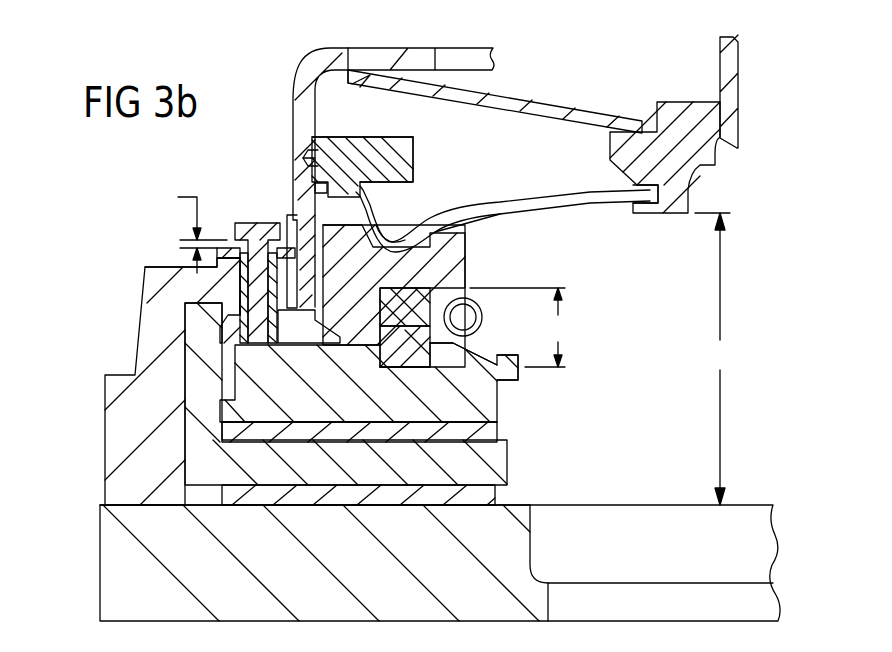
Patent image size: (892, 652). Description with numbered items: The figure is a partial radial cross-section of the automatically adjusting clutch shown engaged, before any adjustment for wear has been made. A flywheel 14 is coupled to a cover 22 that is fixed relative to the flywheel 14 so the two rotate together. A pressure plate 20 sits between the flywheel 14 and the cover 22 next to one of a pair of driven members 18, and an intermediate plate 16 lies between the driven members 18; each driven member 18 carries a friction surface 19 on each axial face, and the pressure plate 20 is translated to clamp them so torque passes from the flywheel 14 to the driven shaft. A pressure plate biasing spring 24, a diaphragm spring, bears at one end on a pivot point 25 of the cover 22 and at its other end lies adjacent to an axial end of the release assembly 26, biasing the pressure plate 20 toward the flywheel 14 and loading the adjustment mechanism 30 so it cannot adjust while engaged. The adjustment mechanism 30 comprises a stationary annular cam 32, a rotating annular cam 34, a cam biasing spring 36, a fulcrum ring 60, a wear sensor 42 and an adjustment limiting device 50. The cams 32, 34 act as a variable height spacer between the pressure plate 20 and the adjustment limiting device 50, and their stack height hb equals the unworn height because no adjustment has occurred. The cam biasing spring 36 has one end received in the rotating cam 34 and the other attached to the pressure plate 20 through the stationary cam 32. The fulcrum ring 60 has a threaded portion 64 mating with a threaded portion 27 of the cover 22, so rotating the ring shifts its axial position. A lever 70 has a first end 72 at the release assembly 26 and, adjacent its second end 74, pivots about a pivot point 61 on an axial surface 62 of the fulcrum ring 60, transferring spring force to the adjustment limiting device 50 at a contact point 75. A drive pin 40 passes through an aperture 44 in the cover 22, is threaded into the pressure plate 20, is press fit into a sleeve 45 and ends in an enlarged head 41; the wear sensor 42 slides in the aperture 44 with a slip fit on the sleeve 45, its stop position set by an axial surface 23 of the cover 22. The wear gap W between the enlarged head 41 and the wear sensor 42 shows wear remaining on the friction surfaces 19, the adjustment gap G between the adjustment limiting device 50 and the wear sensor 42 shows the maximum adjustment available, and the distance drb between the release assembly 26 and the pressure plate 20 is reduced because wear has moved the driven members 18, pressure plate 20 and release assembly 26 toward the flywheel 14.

The flywheel 14 is at (118, 563).
The intermediate plate 16 is at (195, 463).
The driven members 18 is at (487, 492).
The friction surface 19 is at (267, 418).
The pressure plate 20 is at (483, 407).
The cover 22 is at (307, 72).
The axial surface 23 is at (162, 265).
The pressure plate biasing spring 24 is at (523, 103).
The pivot point 25 is at (350, 75).
The release assembly 26 is at (725, 157).
The threaded portion 27 is at (310, 157).
The adjustment mechanism 30 is at (519, 273).
The stationary annular cam 32 is at (521, 379).
The rotating annular cam 34 is at (430, 292).
The cam biasing spring 36 is at (430, 343).
The drive pin 40 is at (240, 250).
The enlarged head 41 is at (237, 220).
The wear sensor 42 is at (293, 222).
The aperture 44 is at (237, 290).
The sleeve 45 is at (242, 273).
The adjustment limiting device 50 is at (453, 257).
The fulcrum ring 60 is at (397, 143).
The pivot point 61 is at (313, 167).
The axial surface 62 is at (387, 173).
The threaded portion 64 is at (330, 137).
The lever 70 is at (477, 205).
The first end 72 is at (612, 187).
The second end 74 is at (380, 218).
The contact point 75 is at (452, 237).
The wear gap W is at (191, 227).
The adjustment gap G is at (235, 310).
The stack height hb is at (522, 327).
The distance drb is at (717, 359).